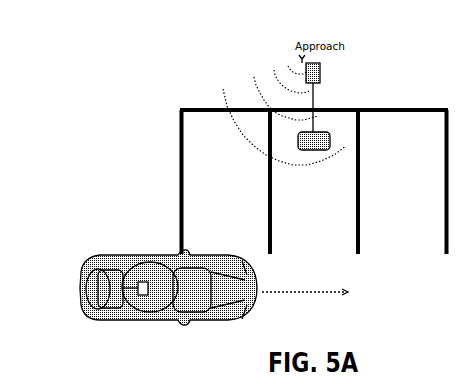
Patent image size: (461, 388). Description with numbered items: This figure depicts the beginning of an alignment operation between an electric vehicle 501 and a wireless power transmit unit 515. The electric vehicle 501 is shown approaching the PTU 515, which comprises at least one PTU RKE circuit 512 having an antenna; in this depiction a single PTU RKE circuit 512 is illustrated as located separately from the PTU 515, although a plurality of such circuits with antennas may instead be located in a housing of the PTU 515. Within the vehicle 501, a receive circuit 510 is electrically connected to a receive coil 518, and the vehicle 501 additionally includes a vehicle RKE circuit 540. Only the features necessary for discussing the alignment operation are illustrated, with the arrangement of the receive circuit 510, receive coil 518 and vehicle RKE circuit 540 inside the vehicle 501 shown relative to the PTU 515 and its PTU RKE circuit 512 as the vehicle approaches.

The electric vehicle 501 is at (229, 319).
The receive circuit 510 is at (98, 283).
The PTU RKE circuit 512 is at (320, 75).
The wireless power transmit unit 515 is at (322, 138).
The receive coil 518 is at (102, 300).
The vehicle RKE circuit 540 is at (142, 296).